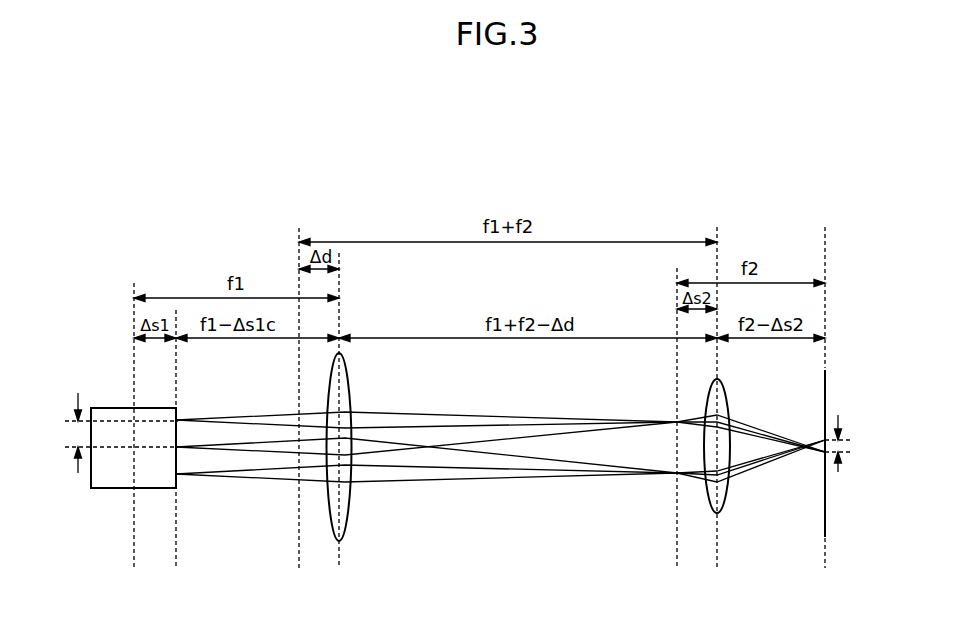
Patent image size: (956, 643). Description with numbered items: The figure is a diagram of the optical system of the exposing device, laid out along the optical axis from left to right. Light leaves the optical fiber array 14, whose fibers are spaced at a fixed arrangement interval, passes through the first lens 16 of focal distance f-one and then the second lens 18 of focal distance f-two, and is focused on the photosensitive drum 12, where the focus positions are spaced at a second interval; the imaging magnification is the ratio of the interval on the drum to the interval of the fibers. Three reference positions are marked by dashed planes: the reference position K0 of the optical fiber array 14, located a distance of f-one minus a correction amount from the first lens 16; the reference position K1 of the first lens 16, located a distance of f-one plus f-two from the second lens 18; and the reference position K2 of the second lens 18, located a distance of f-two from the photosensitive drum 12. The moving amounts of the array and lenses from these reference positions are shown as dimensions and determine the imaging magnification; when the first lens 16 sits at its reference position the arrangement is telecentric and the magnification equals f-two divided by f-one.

The photosensitive drum 12 is at (825, 479).
The optical fiber array 14 is at (110, 407).
The first lens 16 is at (352, 500).
The second lens 18 is at (723, 503).
The reference position of the optical fiber array K0 is at (178, 377).
The reference position of the first lens K1 is at (297, 259).
The reference position of the second lens K2 is at (675, 295).